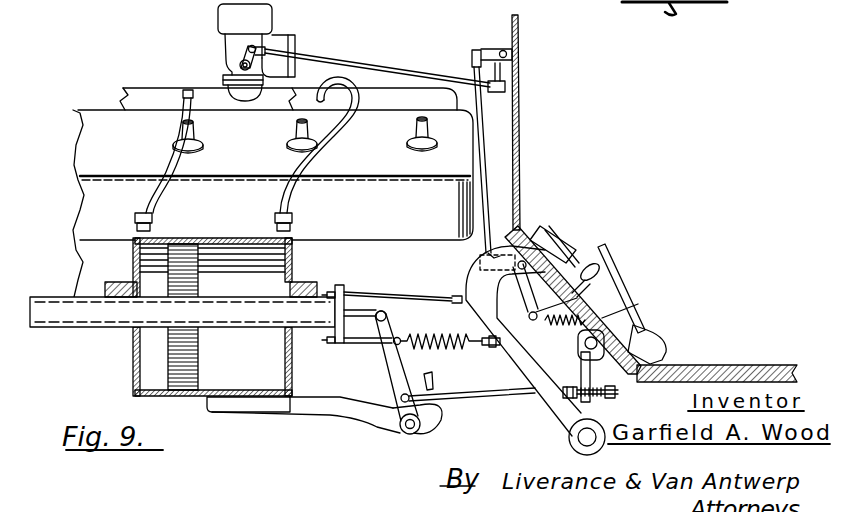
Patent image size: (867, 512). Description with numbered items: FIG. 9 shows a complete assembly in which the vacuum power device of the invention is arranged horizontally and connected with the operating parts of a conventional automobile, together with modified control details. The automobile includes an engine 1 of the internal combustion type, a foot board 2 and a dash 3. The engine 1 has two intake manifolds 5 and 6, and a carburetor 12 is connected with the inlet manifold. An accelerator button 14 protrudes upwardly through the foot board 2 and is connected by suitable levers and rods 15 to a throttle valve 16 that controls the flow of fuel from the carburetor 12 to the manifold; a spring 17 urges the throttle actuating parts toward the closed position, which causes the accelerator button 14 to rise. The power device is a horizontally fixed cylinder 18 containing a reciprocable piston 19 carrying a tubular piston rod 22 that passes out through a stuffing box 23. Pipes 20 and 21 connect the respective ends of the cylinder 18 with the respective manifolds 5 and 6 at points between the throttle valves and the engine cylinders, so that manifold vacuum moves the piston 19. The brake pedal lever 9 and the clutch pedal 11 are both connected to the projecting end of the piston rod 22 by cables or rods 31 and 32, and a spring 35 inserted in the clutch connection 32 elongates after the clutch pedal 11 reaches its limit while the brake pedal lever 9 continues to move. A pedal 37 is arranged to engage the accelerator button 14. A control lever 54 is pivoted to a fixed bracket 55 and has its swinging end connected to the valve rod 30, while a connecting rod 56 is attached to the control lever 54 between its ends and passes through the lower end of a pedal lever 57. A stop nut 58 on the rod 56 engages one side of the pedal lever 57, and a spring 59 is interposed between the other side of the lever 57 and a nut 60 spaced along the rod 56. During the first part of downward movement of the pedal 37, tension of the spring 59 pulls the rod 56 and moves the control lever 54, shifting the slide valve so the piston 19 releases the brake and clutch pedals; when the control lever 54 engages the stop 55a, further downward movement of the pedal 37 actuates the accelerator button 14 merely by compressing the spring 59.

The engine 1 is at (95, 122).
The foot board 2 is at (522, 231).
The dash 3 is at (521, 124).
The intake manifold 5 is at (146, 95).
The intake manifold 6 is at (314, 95).
The brake pedal lever 9 is at (546, 240).
The clutch pedal 11 is at (566, 246).
The carburetor 12 is at (255, 20).
The accelerator button 14 is at (600, 268).
The levers and rods 15 is at (360, 66).
The throttle valve 16 is at (240, 66).
The spring 17 is at (509, 352).
The cylinder 18 is at (134, 372).
The piston 19 is at (200, 374).
The pipe 20 is at (146, 190).
The pipe 21 is at (284, 200).
The piston rod 22 is at (256, 333).
The stuffing box 23 is at (130, 290).
The valve rod 30 is at (357, 314).
The cable or rod 31 is at (369, 292).
The cable or rod 32 is at (362, 346).
The spring 35 is at (452, 336).
The pedal 37 is at (612, 277).
The control lever 54 is at (392, 387).
The fixed bracket 55 is at (306, 404).
The stop 55a is at (438, 382).
The connecting rod 56 is at (478, 398).
The pedal lever 57 is at (622, 322).
The stop nut 58 is at (582, 378).
The spring 59 is at (596, 398).
The nut 60 is at (620, 390).